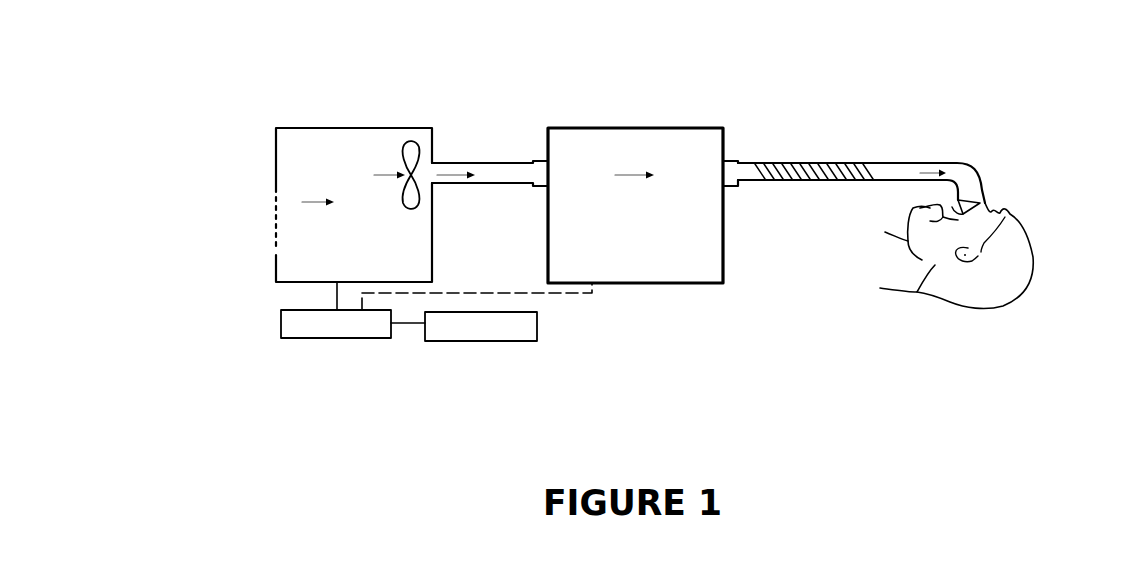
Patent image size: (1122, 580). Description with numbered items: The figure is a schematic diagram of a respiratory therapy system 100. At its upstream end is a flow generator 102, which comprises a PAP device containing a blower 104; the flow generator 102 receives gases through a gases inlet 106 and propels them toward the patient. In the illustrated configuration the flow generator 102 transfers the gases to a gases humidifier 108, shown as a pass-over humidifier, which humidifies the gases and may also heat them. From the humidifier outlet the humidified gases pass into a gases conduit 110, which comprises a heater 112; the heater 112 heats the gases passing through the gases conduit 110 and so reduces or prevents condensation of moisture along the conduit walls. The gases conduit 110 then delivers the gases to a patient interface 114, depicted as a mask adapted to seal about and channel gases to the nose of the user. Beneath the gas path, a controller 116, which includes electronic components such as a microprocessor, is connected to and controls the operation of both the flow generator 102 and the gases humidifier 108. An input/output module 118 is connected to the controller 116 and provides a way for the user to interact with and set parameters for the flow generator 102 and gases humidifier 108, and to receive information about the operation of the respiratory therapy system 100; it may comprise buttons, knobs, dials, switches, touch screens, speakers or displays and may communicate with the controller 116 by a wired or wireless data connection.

The respiratory therapy system 100 is at (712, 342).
The flow generator 102 is at (330, 115).
The blower 104 is at (407, 120).
The gases inlet 106 is at (258, 217).
The gases humidifier 108 is at (641, 117).
The gases conduit 110 is at (798, 142).
The heater 112 is at (833, 157).
The patient interface 114 is at (992, 180).
The controller 116 is at (330, 352).
The input/output (I/O) module 118 is at (465, 352).